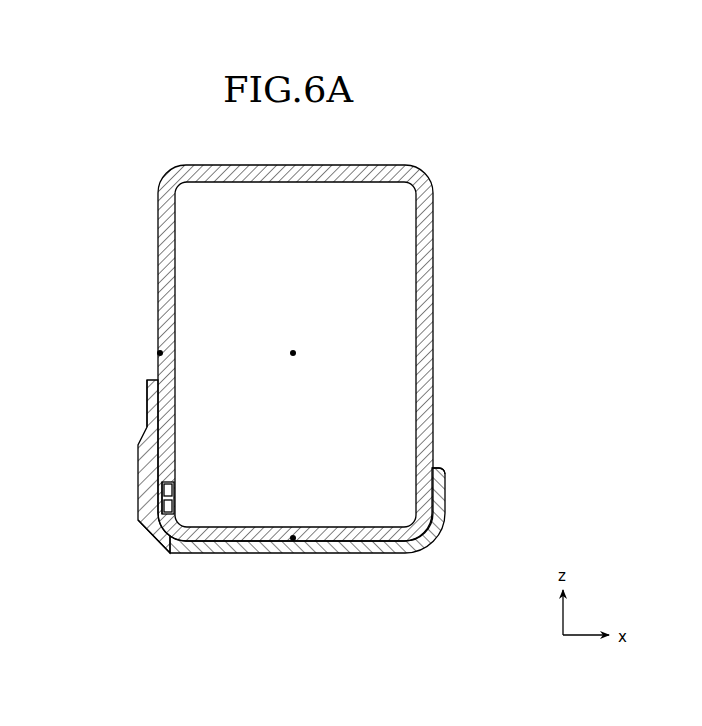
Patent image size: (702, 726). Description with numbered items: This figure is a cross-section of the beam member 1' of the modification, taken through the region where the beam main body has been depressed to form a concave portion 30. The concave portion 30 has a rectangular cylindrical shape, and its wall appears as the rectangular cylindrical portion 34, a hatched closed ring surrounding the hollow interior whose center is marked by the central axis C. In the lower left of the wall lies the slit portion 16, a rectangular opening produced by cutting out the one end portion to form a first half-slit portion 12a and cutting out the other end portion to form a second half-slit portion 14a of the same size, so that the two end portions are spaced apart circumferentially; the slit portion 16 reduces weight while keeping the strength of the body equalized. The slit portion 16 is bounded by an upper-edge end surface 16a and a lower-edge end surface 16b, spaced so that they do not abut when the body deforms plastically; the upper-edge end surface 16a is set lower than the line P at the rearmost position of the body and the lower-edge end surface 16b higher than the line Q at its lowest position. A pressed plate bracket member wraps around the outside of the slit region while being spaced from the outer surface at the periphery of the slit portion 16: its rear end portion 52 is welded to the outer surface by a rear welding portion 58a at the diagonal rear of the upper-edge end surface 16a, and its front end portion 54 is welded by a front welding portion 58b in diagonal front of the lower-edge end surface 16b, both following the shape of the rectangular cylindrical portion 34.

The beam member 1' is at (483, 83).
The concave portion 30 is at (330, 310).
The rectangular cylindrical portion 34 is at (436, 278).
The rear end portion 52 is at (115, 474).
The front end portion 54 is at (347, 510).
The rear welding portion 58a is at (147, 386).
The front welding portion 58b is at (443, 469).
The slit portion 16 is at (170, 491).
The upper-edge end surface 16a is at (157, 492).
The lower-edge end surface 16b is at (140, 524).
The first half-slit portion 12a is at (172, 487).
The second half-slit portion 14a is at (177, 507).
The line at the rearmost position P is at (160, 353).
The central axis C is at (293, 353).
The line at the lowest position Q is at (293, 542).